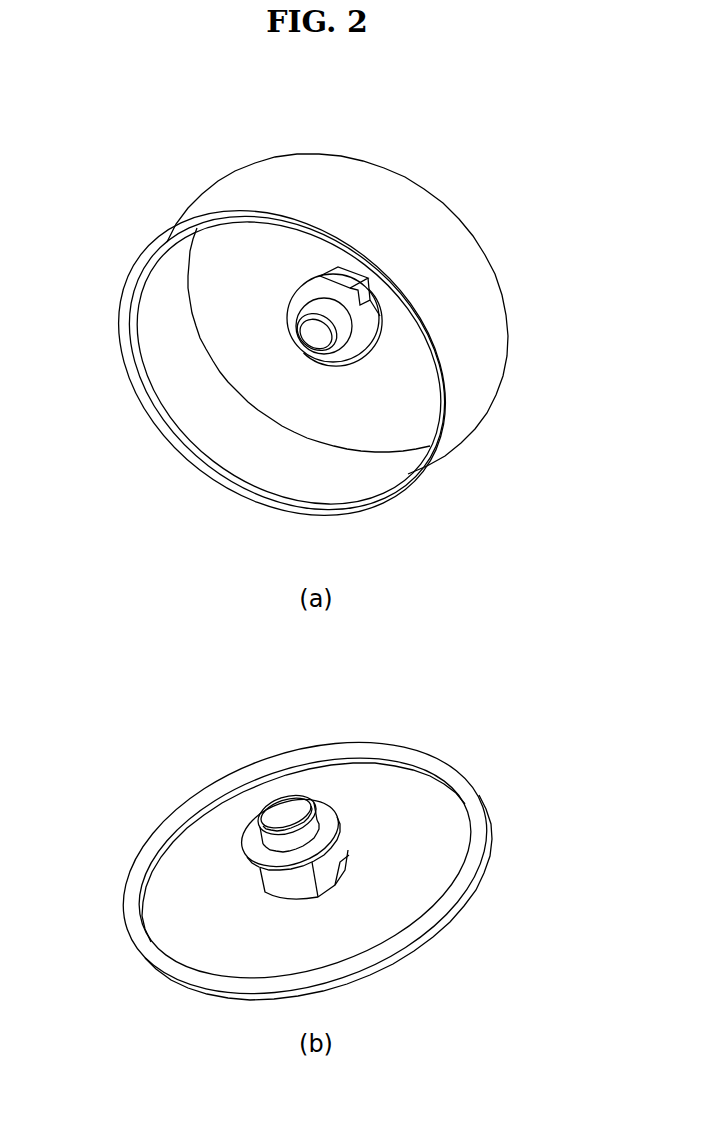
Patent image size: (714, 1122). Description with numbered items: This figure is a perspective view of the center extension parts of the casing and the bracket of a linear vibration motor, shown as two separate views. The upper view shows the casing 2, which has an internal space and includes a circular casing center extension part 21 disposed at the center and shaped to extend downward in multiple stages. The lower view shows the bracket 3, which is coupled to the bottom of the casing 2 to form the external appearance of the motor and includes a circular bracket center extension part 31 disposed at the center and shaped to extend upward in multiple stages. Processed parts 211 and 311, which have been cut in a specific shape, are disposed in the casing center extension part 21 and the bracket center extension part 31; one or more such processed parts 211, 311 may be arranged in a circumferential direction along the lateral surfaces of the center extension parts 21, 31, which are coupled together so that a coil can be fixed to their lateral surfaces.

The casing 2 is at (422, 212).
The casing center extension part 21 is at (302, 300).
The processed part 211 is at (372, 303).
The bracket 3 is at (415, 822).
The bracket center extension part 31 is at (318, 810).
The processed part 311 is at (283, 885).